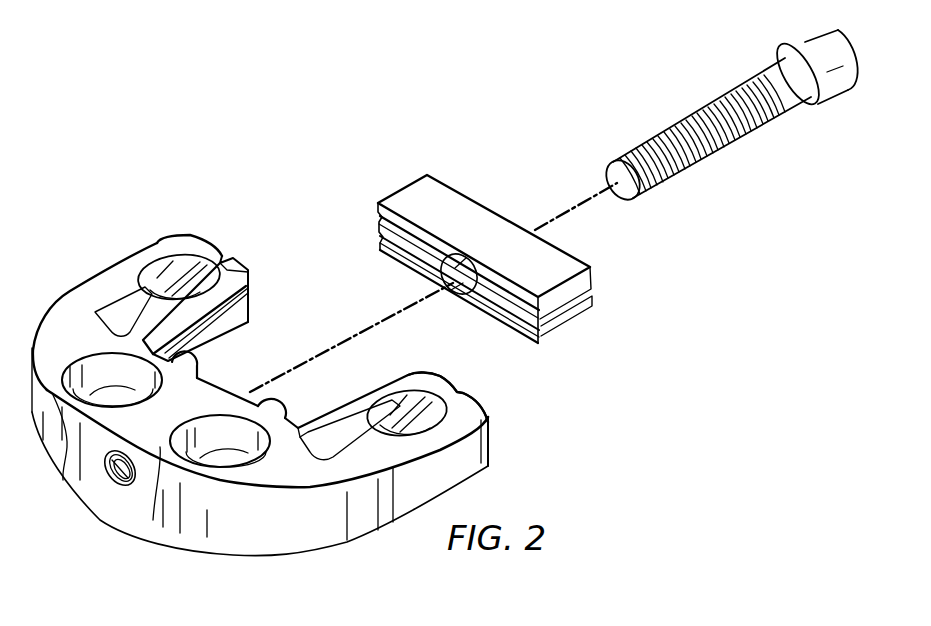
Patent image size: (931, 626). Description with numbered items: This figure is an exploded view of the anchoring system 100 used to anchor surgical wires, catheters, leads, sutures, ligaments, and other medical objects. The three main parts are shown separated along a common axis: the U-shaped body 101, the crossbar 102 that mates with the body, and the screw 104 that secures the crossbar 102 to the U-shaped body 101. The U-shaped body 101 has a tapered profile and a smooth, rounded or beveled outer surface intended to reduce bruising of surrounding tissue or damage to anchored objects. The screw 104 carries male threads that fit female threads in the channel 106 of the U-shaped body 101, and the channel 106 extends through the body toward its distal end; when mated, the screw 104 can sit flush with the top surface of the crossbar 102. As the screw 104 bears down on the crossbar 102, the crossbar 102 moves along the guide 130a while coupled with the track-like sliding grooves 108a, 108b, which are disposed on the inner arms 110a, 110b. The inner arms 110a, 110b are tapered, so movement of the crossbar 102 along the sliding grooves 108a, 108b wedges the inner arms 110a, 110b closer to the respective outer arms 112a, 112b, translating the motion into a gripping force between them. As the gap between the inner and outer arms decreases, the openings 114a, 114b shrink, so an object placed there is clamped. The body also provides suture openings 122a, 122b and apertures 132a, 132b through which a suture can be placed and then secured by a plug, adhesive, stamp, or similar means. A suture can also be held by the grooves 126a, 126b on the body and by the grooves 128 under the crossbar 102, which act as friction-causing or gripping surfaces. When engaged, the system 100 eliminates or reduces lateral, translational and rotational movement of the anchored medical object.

The system 100 is at (225, 151).
The U-shaped body 101 is at (198, 553).
The crossbar 102 is at (477, 213).
The screw 104 is at (812, 43).
The channel 106 is at (118, 478).
The sliding groove 108a is at (378, 226).
The sliding groove 108b is at (570, 316).
The inner arm 110a is at (235, 270).
The inner arm 110b is at (406, 387).
The outer arm 112a is at (190, 240).
The outer arm 112b is at (478, 406).
The opening 114a is at (158, 258).
The opening 114b is at (425, 378).
The suture opening 122a is at (87, 357).
The suture opening 122b is at (283, 488).
The groove 126a is at (195, 352).
The groove 126b is at (268, 412).
The grooves 128 is at (412, 262).
The guide 130a is at (240, 318).
The aperture 132a is at (80, 462).
The aperture 132b is at (172, 480).